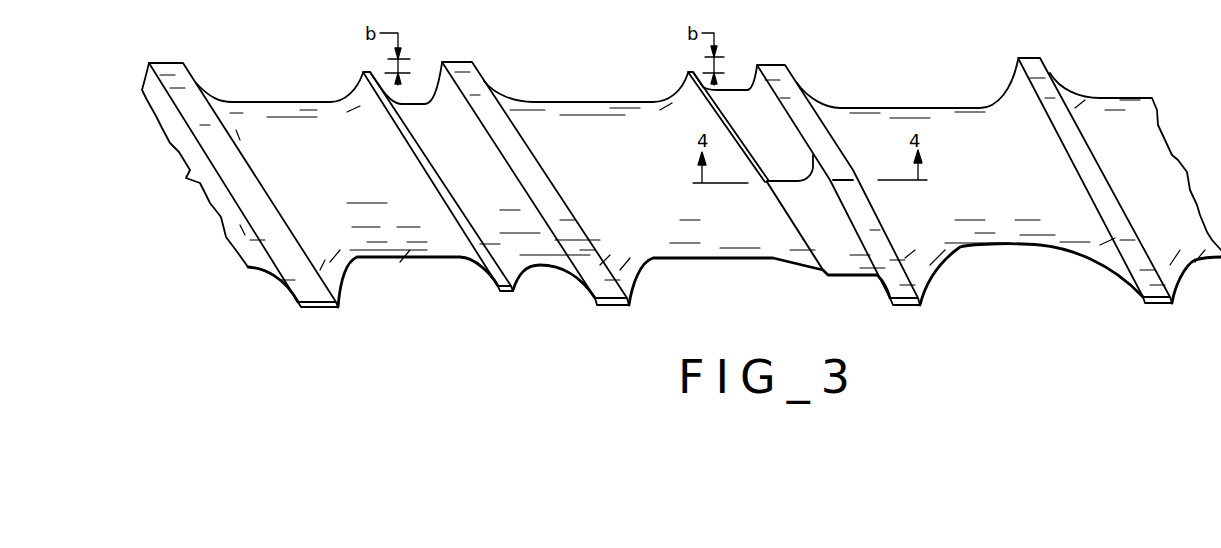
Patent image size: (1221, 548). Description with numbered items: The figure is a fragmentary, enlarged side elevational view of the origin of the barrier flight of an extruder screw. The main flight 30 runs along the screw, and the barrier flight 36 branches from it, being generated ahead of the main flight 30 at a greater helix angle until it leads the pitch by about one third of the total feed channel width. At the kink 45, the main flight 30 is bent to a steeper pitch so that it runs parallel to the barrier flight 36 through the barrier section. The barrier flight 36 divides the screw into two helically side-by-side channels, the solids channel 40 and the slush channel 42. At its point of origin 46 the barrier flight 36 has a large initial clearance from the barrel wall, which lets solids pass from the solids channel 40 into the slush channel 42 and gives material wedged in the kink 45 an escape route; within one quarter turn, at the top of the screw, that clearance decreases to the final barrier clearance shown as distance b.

The main flight 30 is at (167, 63).
The barrier flight 36 is at (363, 72).
The solids channel 40 is at (262, 102).
The slush channel 42 is at (423, 100).
The kink 45 is at (850, 180).
The point of origin 46 is at (767, 183).